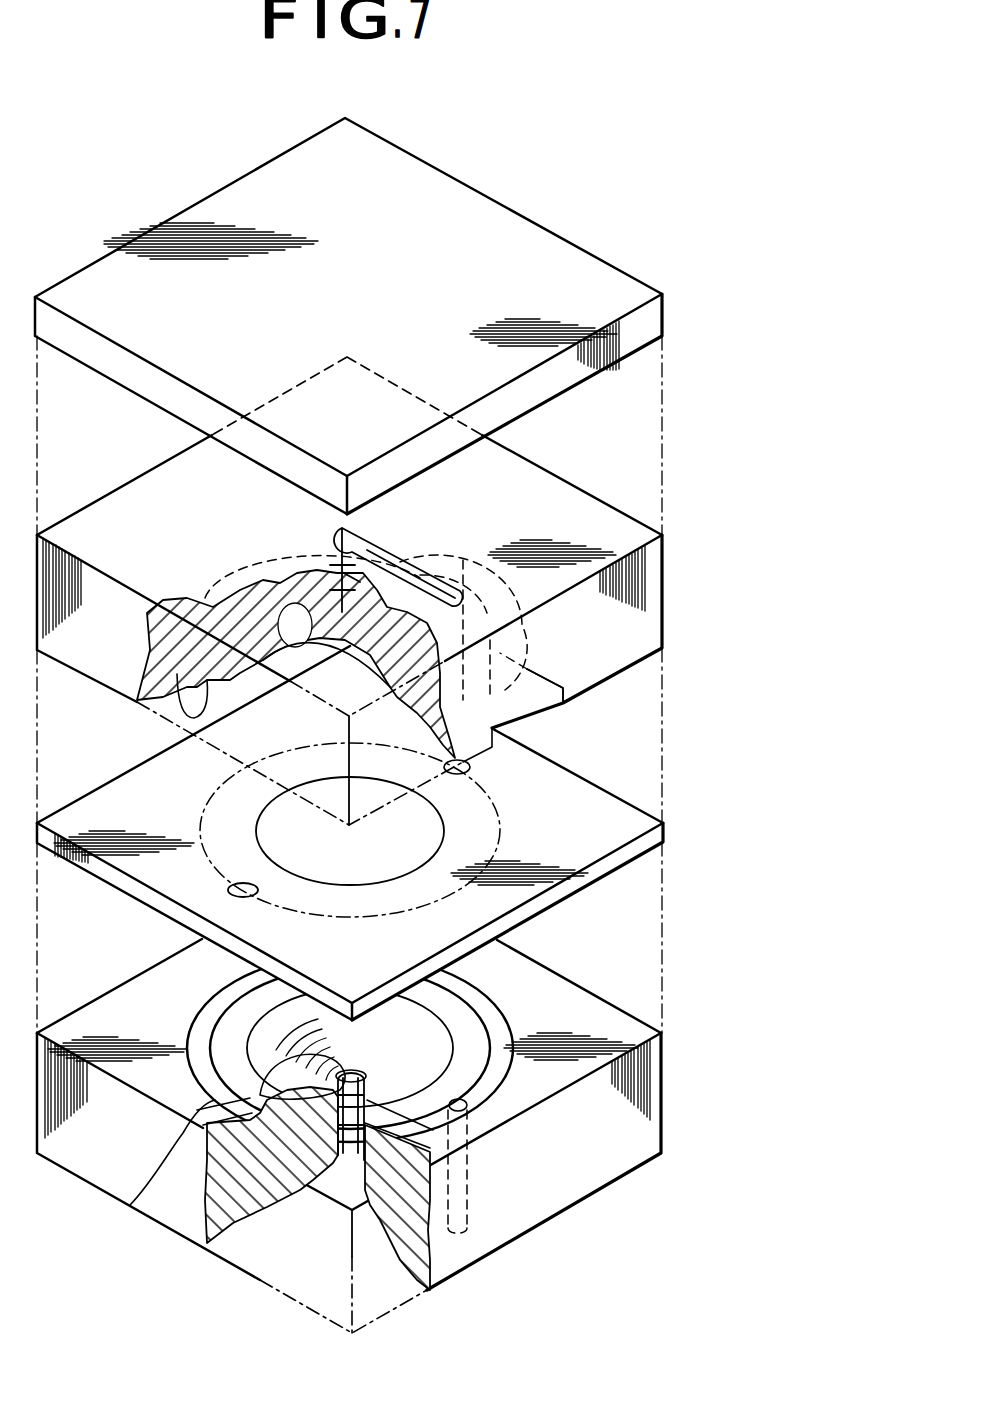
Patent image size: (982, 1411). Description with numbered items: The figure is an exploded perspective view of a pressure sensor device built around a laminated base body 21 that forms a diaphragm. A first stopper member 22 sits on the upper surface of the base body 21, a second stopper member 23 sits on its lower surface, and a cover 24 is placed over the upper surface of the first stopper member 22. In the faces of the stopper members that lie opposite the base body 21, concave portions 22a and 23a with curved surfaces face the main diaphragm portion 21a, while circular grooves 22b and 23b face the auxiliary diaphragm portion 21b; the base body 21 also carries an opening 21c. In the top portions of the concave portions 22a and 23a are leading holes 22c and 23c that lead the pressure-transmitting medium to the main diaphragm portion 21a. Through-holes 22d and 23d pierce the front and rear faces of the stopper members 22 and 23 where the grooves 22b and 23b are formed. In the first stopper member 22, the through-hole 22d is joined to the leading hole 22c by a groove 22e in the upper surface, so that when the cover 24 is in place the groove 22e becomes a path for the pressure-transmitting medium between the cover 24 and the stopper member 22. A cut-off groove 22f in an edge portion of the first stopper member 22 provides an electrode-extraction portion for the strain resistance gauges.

The cover 24 is at (528, 251).
The first stopper member 22 is at (643, 590).
The concave portion 22a is at (370, 657).
The circular groove 22b is at (178, 712).
The leading hole 22c is at (325, 548).
The through-hole 22d is at (527, 640).
The groove 22e is at (412, 557).
The cut-off groove 22f is at (540, 712).
The laminated base body 21 is at (668, 834).
The main diaphragm portion 21a is at (206, 808).
The auxiliary diaphragm portion 21b is at (450, 822).
The hole 21c is at (230, 887).
The second stopper member 23 is at (654, 1108).
The concave portion 23a is at (430, 1052).
The circular groove 23b is at (497, 1075).
The leading hole 23c is at (130, 1205).
The through-hole 23d is at (460, 1175).